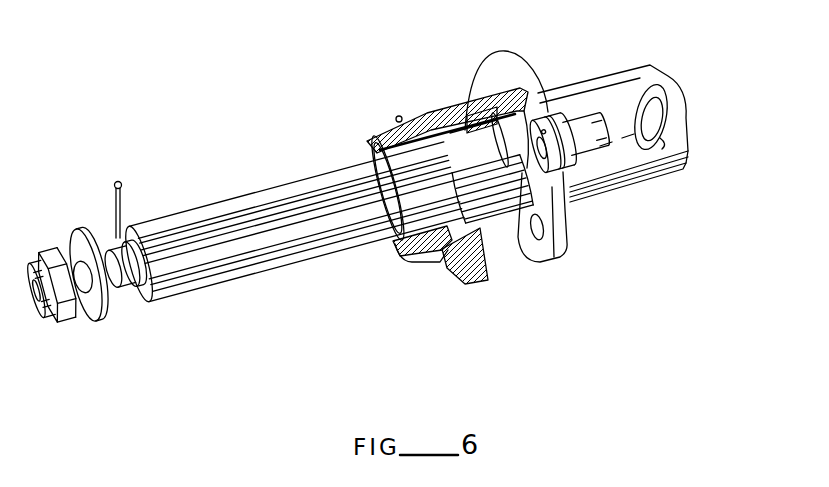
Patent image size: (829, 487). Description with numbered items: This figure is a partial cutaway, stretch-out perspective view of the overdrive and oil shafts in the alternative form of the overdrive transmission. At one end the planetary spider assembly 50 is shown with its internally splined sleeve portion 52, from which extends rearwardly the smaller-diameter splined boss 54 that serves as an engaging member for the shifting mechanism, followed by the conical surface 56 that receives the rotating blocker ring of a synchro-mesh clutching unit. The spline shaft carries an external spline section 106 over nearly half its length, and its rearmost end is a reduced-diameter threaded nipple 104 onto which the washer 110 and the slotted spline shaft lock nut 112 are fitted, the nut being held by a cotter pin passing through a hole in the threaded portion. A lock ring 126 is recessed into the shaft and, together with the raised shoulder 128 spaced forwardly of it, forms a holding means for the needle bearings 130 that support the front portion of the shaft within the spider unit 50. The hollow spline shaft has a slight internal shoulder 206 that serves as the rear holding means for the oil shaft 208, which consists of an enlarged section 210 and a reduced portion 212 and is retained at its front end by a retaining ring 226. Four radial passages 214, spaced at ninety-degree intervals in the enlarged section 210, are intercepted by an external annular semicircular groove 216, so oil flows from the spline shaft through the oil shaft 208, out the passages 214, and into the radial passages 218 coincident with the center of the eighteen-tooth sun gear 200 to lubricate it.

The planetary spider assembly 50 is at (476, 290).
The sleeve portion 52 is at (627, 105).
The splined boss 54 is at (399, 116).
The conical surface 56 is at (378, 138).
The threaded nipple 104 is at (136, 288).
The spline section 106 is at (270, 258).
The washer 110 is at (113, 306).
The spline shaft lock nut 112 is at (68, 304).
The lock ring 126 is at (387, 238).
The raised shoulder 128 is at (446, 103).
The needle bearings 130 is at (415, 254).
The sun gear 200 is at (549, 142).
The shoulder 206 is at (492, 168).
The oil shaft 208 is at (576, 104).
The enlarged section 210 is at (584, 132).
The reduced portion 212 is at (590, 118).
The radial passages 214 is at (557, 152).
The annular semicircular groove 216 is at (556, 214).
The radial passages 218 is at (466, 125).
The retaining ring 226 is at (660, 96).